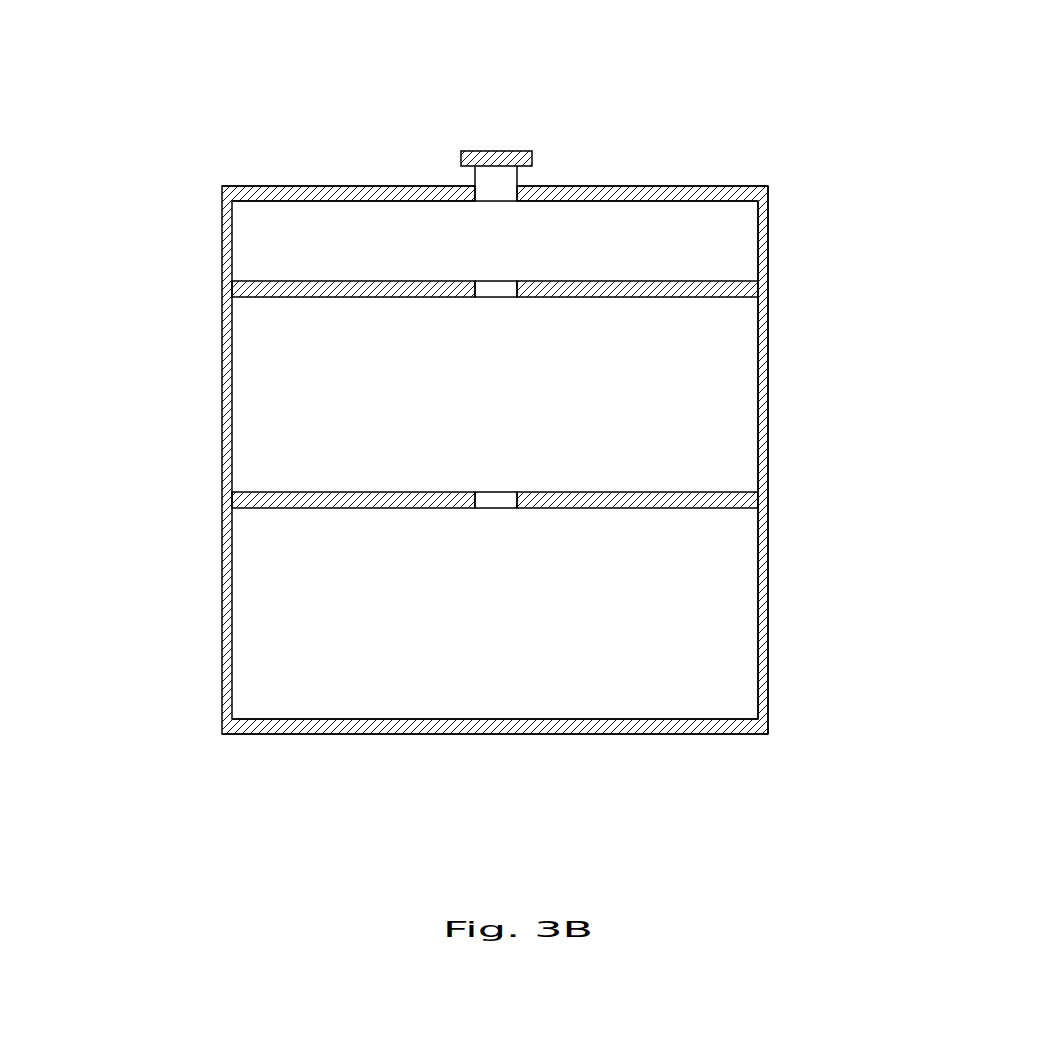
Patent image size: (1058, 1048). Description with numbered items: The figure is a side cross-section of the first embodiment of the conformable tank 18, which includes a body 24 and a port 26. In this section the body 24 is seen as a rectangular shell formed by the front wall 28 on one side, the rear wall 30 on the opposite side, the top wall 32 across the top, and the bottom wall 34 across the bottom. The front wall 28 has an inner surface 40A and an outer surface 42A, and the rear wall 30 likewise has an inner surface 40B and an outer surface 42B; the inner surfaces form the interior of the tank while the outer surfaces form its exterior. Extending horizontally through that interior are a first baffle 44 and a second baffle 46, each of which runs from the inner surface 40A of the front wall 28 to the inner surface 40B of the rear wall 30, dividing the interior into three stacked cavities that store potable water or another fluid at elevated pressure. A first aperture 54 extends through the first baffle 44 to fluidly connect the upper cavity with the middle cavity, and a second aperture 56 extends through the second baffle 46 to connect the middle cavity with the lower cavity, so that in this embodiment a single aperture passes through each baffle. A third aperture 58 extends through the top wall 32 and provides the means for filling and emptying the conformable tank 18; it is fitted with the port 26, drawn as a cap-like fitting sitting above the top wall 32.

The conformable tank 18 is at (855, 144).
The body 24 is at (246, 109).
The port 26 is at (496, 163).
The front wall 28 is at (230, 642).
The rear wall 30 is at (770, 537).
The top wall 32 is at (683, 186).
The bottom wall 34 is at (501, 734).
The inner surface 40A is at (242, 390).
The inner surface 40B is at (748, 356).
The outer surface 42A is at (212, 463).
The outer surface 42B is at (780, 450).
The first baffle 44 is at (347, 290).
The second baffle 46 is at (345, 498).
The first aperture 54 is at (498, 293).
The second aperture 56 is at (497, 498).
The third aperture 58 is at (493, 197).